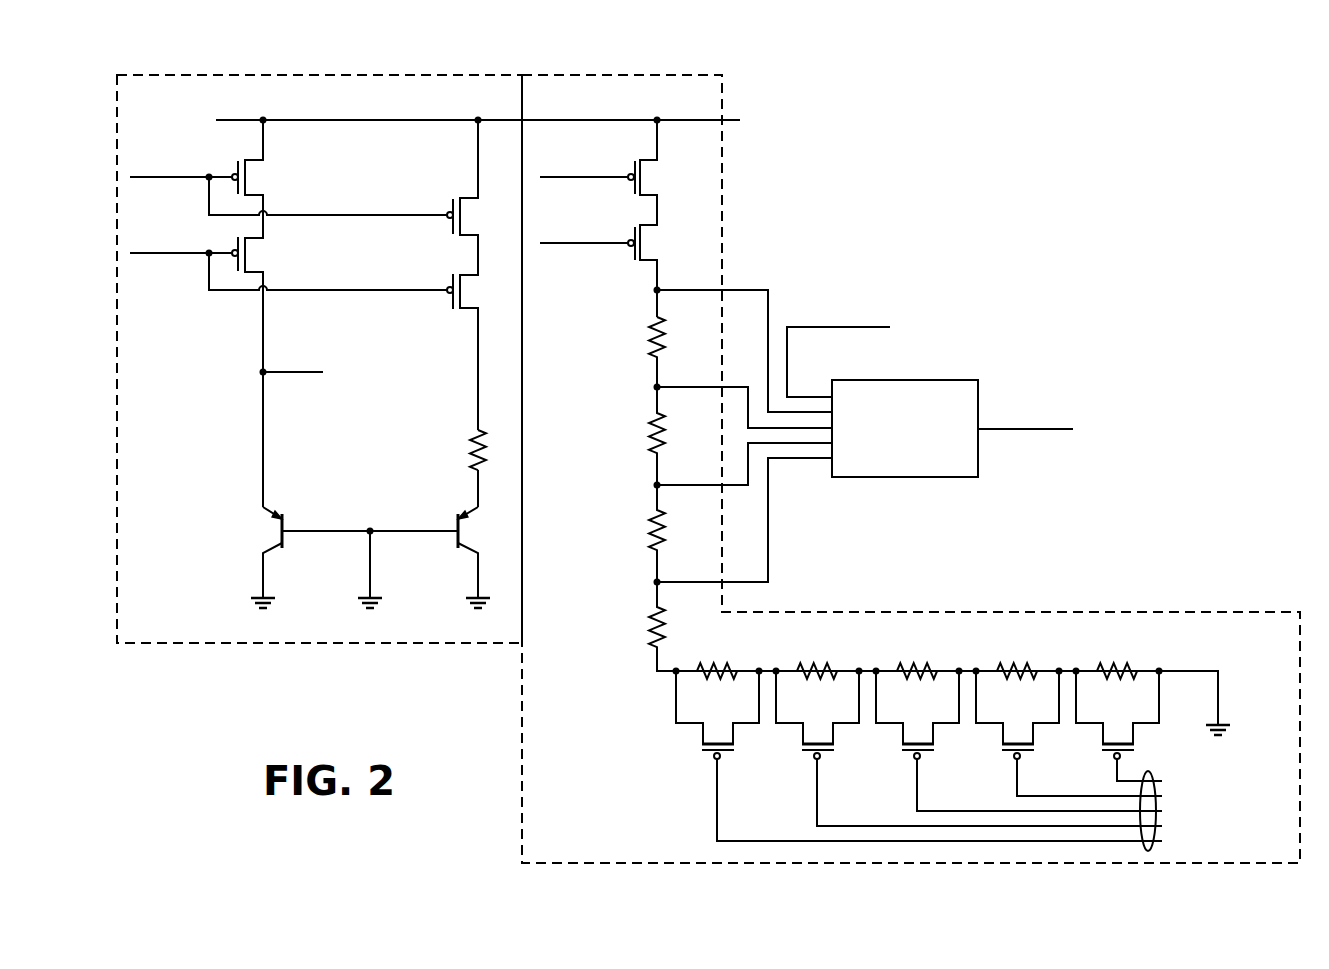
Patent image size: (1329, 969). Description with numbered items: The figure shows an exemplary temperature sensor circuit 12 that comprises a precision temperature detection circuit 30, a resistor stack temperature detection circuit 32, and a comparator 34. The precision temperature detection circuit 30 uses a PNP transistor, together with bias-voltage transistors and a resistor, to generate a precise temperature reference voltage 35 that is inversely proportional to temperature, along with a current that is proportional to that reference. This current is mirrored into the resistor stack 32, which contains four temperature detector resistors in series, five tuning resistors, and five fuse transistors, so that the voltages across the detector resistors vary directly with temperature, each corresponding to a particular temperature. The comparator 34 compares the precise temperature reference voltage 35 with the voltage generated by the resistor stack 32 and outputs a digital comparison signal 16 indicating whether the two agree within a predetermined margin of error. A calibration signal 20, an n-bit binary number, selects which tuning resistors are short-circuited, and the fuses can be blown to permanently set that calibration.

The temperature sensor circuit 12 is at (749, 214).
The comparison signal 16 is at (1005, 430).
The calibration signal 20 is at (1150, 771).
The precision temperature detection circuit 30 is at (298, 643).
The resistor stack temperature detection circuit 32 is at (522, 718).
The comparator 34 is at (928, 477).
The precise temperature reference voltage 35 is at (280, 373).